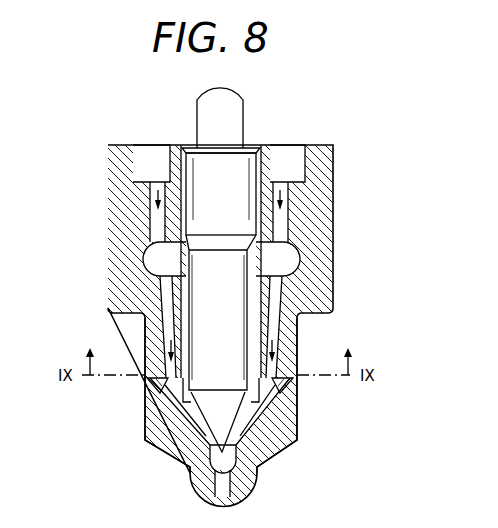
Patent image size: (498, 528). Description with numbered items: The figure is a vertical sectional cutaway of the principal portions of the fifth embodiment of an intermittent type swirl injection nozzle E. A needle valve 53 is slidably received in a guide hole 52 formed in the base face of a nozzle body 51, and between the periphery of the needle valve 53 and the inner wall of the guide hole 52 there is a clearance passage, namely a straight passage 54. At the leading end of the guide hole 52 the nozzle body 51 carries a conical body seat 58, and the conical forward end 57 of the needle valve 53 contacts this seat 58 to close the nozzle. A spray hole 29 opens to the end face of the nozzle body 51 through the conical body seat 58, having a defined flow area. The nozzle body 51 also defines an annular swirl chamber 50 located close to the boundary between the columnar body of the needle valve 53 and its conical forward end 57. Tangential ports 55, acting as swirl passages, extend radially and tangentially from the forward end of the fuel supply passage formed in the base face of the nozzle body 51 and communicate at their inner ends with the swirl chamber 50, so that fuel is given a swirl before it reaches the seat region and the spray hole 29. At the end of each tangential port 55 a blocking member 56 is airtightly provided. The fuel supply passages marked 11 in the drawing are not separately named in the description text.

The injection nozzle E is at (341, 197).
The fuel passage 11 is at (160, 222).
The spray hole 29 is at (224, 482).
The annular swirl chamber 50 is at (294, 442).
The nozzle body 51 is at (320, 246).
The guide hole 52 is at (251, 344).
The needle valve 53 is at (195, 319).
The straight passage 54 is at (256, 297).
The tangential ports 55 is at (178, 388).
The blocking member 56 is at (150, 386).
The conical forward end 57 is at (196, 422).
The conical body seat 58 is at (257, 461).